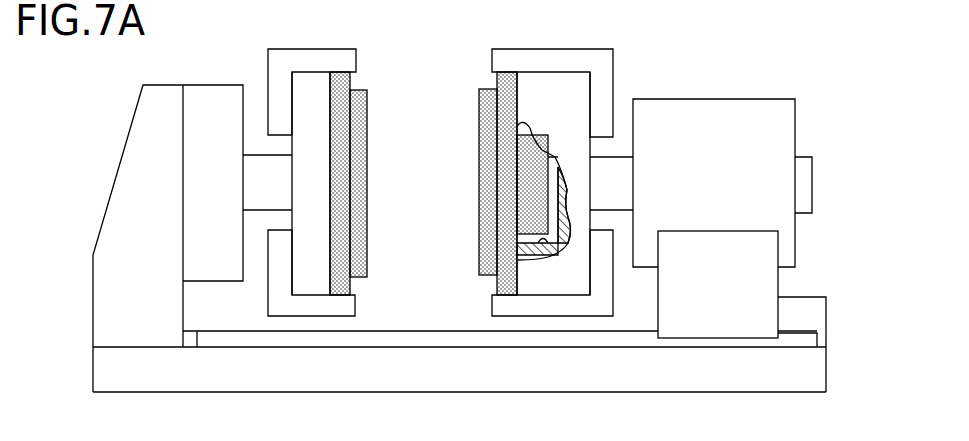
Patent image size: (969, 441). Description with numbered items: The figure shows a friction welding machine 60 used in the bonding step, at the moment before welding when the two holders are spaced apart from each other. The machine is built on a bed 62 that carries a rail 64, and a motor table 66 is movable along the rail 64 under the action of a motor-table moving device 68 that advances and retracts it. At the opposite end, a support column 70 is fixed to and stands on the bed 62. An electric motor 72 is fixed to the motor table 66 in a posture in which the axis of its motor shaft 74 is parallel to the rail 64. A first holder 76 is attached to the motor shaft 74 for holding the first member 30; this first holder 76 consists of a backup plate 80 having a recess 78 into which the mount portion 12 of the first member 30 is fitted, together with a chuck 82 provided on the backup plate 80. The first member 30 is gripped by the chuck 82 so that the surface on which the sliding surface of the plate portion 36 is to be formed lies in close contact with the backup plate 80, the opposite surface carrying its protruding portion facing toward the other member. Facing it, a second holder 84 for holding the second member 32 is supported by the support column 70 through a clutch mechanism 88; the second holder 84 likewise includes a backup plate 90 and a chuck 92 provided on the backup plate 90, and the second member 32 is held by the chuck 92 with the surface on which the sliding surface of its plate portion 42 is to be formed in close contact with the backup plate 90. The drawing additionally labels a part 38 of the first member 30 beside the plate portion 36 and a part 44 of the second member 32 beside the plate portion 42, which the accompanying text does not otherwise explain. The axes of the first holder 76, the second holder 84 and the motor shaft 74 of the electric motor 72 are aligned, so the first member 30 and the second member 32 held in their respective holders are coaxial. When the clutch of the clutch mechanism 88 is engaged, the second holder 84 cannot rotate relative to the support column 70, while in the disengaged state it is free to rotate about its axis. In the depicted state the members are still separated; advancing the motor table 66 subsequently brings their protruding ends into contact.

The mount portion 12 is at (522, 247).
The first member 30 is at (463, 107).
The second member 32 is at (380, 113).
The plate portion 36 is at (507, 210).
The outer layer 38 is at (485, 147).
The plate portion 42 is at (338, 207).
The outer layer 44 is at (358, 162).
The friction welding machine 60 is at (690, 38).
The bed 62 is at (495, 383).
The rail 64 is at (433, 340).
The motor table 66 is at (768, 283).
The motor-table moving device 68 is at (818, 318).
The support column 70 is at (123, 210).
The electric motor 72 is at (770, 112).
The motor shaft 74 is at (618, 165).
The first holder 76 is at (547, 32).
The recess 78 is at (557, 257).
The backup plate 80 is at (573, 282).
The chuck 82 is at (505, 60).
The second holder 84 is at (304, 32).
The clutch mechanism 88 is at (211, 97).
The backup plate 90 is at (310, 278).
The chuck 92 is at (320, 58).